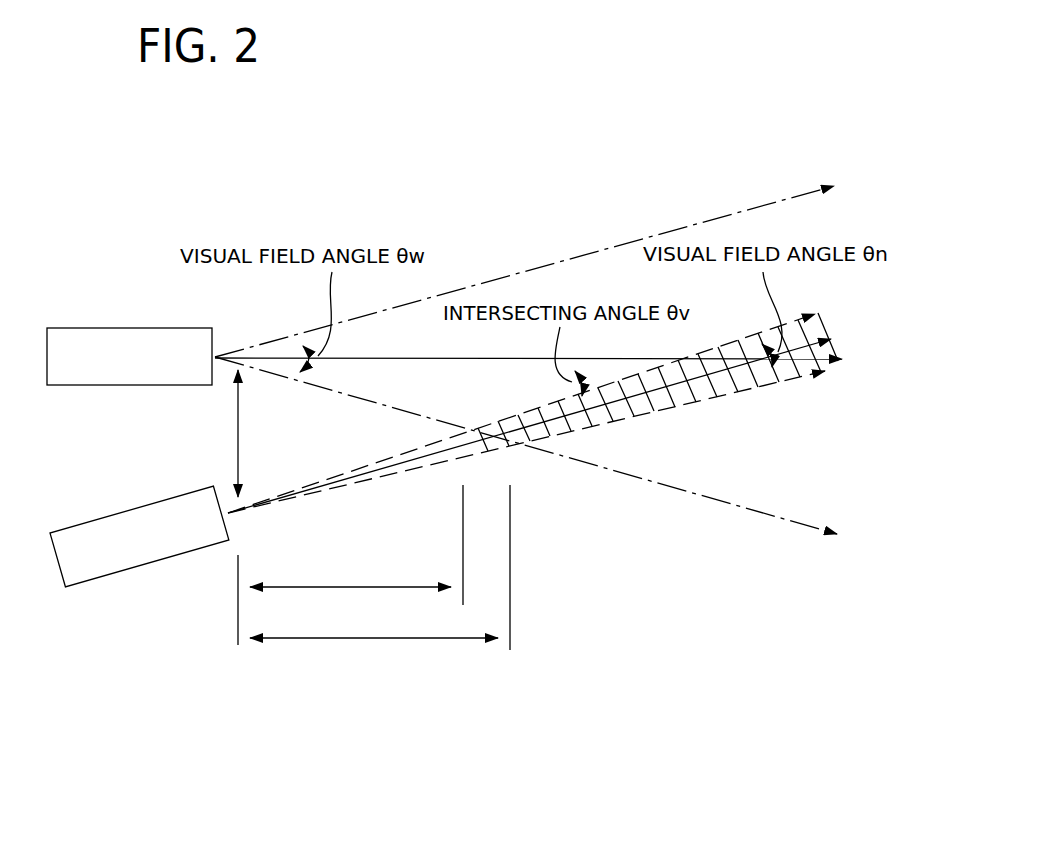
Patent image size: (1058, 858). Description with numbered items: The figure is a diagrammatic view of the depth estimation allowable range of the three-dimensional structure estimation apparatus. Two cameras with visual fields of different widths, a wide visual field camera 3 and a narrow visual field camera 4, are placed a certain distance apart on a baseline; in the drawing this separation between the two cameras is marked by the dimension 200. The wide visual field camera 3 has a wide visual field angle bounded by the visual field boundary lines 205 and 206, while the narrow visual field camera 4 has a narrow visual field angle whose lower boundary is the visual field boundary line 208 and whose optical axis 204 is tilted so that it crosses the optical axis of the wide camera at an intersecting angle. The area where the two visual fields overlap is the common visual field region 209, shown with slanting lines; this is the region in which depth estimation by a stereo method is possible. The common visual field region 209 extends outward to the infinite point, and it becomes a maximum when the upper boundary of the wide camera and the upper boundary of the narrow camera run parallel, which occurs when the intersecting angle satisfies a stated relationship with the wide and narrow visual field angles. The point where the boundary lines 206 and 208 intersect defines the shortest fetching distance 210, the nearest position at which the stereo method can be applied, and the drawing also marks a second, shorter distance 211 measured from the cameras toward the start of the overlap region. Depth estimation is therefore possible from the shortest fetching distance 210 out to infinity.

The wide visual field camera 3 is at (108, 328).
The narrow visual field camera 4 is at (125, 577).
The distance between cameras 200 is at (233, 416).
The optical axis 204 is at (677, 402).
The visual field boundary line 205 is at (752, 208).
The visual field boundary line 206 is at (733, 507).
The visual field boundary line 208 is at (600, 426).
The common visual field region 209 is at (478, 418).
The shortest fetching distance 210 is at (345, 640).
The distance to near end of overlap 211 is at (332, 586).